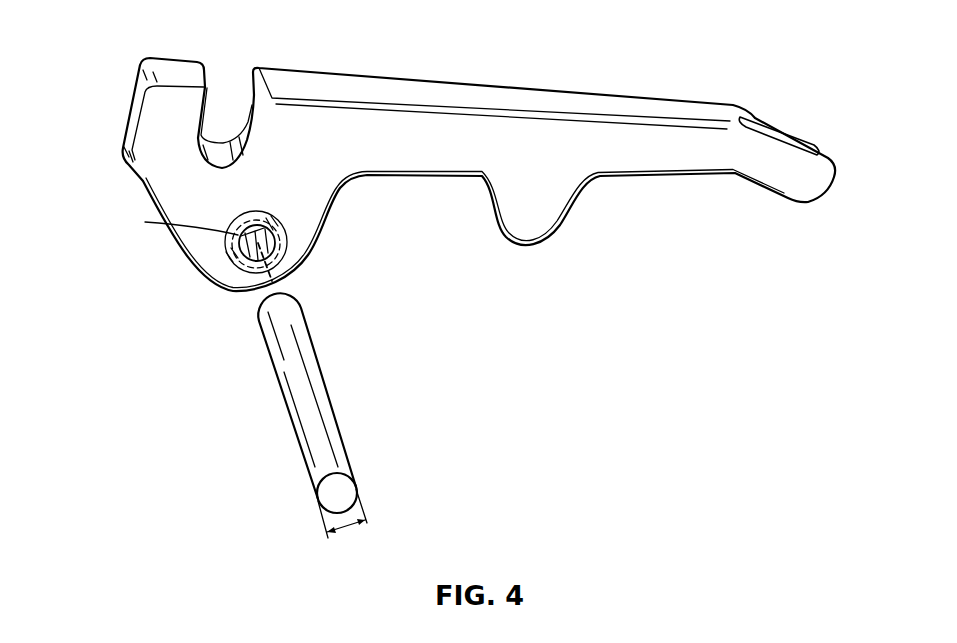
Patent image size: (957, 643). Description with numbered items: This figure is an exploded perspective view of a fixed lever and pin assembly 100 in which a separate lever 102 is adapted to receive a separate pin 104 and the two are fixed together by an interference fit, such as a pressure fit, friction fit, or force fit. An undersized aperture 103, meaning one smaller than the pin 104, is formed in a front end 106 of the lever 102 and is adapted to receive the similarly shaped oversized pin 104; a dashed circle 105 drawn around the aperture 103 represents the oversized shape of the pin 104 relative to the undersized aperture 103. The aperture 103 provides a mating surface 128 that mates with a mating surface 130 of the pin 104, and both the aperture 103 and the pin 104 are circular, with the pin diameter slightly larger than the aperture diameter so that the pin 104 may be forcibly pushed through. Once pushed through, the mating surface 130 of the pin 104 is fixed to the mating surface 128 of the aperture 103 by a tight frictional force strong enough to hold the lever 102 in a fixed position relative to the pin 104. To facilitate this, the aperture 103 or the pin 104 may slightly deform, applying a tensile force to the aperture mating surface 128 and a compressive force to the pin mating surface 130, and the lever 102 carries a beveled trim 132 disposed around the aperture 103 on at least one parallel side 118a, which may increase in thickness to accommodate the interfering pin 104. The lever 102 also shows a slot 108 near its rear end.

The lever and pin assembly 100 is at (92, 60).
The lever 102 is at (505, 102).
The aperture 103 is at (268, 236).
The pin 104 is at (340, 424).
The dashed circle 105 is at (243, 246).
The front end 106 is at (128, 128).
The slot 108 is at (812, 176).
The parallel side 118a is at (415, 153).
The mating surface 128 is at (252, 252).
The mating surface 130 is at (300, 353).
The beveled trim 132 is at (282, 252).